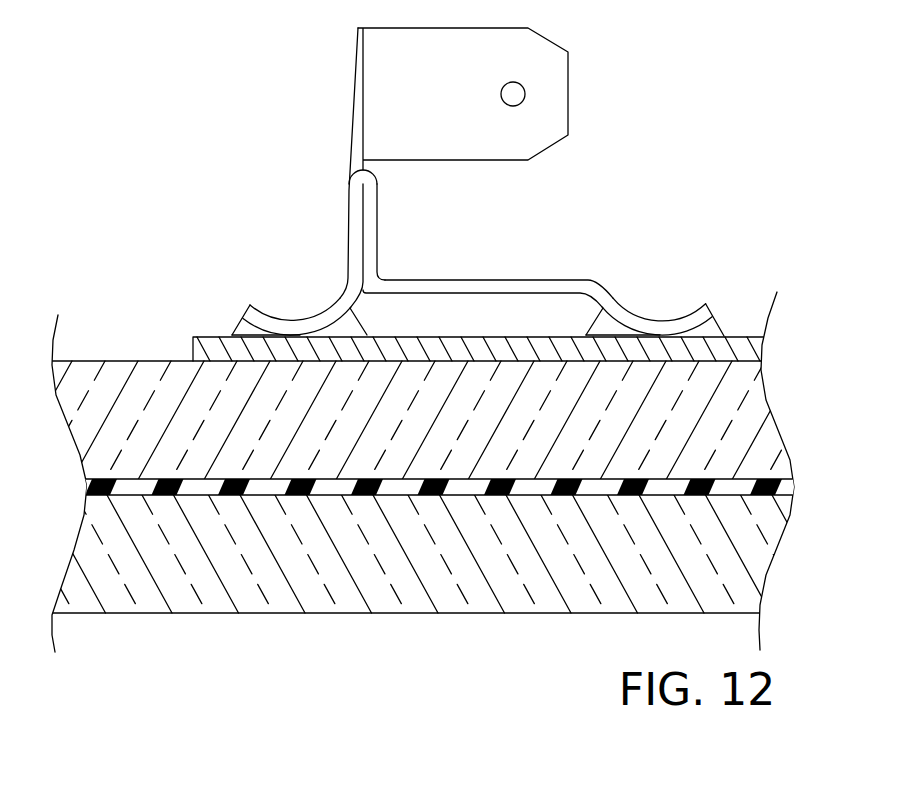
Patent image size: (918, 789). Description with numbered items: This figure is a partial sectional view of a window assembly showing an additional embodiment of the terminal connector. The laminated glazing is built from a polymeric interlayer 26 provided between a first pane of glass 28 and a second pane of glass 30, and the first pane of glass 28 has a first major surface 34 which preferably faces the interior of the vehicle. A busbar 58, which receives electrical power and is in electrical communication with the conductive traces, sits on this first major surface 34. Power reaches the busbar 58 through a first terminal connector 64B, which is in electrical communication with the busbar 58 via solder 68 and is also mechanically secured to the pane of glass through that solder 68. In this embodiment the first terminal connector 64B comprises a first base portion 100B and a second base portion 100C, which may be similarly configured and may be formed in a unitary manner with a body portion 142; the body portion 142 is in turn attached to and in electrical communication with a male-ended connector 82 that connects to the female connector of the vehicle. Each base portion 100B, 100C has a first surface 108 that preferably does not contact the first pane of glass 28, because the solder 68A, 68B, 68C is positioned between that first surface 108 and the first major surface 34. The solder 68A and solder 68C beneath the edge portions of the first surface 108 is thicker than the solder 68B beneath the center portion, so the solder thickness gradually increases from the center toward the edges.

The polymeric interlayer 26 is at (788, 488).
The first pane of glass 28 is at (758, 433).
The second pane of glass 30 is at (764, 547).
The first major surface 34 is at (112, 361).
The busbar 58 is at (762, 348).
The first terminal connector 64B is at (527, 278).
The solder 68 is at (350, 316).
The solder 68A is at (242, 321).
The solder 68B is at (274, 335).
The solder 68C is at (362, 330).
The male-ended connector 82 is at (560, 92).
The first base portion 100B is at (713, 312).
The second base portion 100C is at (249, 304).
The first surface 108 is at (310, 333).
The body portion 142 is at (428, 278).